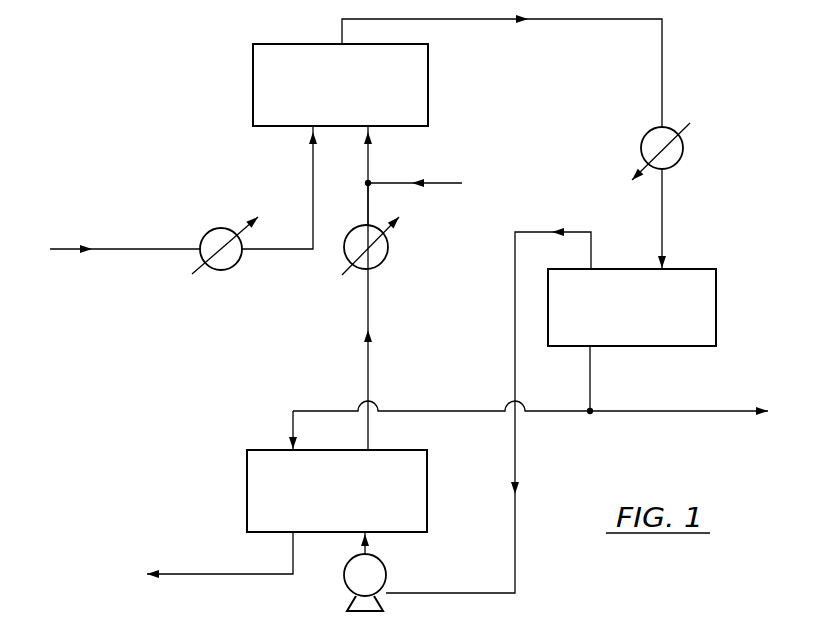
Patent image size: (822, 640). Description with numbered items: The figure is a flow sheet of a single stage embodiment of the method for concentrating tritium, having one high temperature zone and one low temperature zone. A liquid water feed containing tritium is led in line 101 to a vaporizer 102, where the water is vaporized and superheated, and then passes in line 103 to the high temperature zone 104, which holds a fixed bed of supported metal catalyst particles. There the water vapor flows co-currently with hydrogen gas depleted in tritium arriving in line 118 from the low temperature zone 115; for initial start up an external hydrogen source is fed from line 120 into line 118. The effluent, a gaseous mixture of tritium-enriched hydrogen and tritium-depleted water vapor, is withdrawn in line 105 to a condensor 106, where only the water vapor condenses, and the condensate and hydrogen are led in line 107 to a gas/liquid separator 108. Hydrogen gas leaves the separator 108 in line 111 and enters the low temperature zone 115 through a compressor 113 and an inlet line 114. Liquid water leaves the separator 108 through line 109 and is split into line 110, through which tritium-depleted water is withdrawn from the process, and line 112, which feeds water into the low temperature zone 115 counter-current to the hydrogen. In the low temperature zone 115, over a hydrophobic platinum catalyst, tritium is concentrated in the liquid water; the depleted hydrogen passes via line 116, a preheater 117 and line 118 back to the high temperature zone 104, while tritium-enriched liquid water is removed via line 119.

The line 101 is at (111, 249).
The vaporizer 102 is at (208, 232).
The line 103 is at (313, 187).
The high temperature zone 104 is at (254, 83).
The line 105 is at (595, 22).
The condensor 106 is at (682, 145).
The line 107 is at (661, 222).
The gas/liquid separator 108 is at (716, 277).
The line 109 is at (590, 387).
The line 110 is at (671, 410).
The line 111 is at (533, 232).
The line 112 is at (450, 411).
The compressor 113 is at (385, 570).
The inlet line 114 is at (363, 550).
The low temperature zone 115 is at (247, 472).
The line 116 is at (368, 358).
The preheater 117 is at (382, 262).
The line 118 is at (368, 203).
The line 119 is at (205, 574).
The line 120 is at (450, 183).